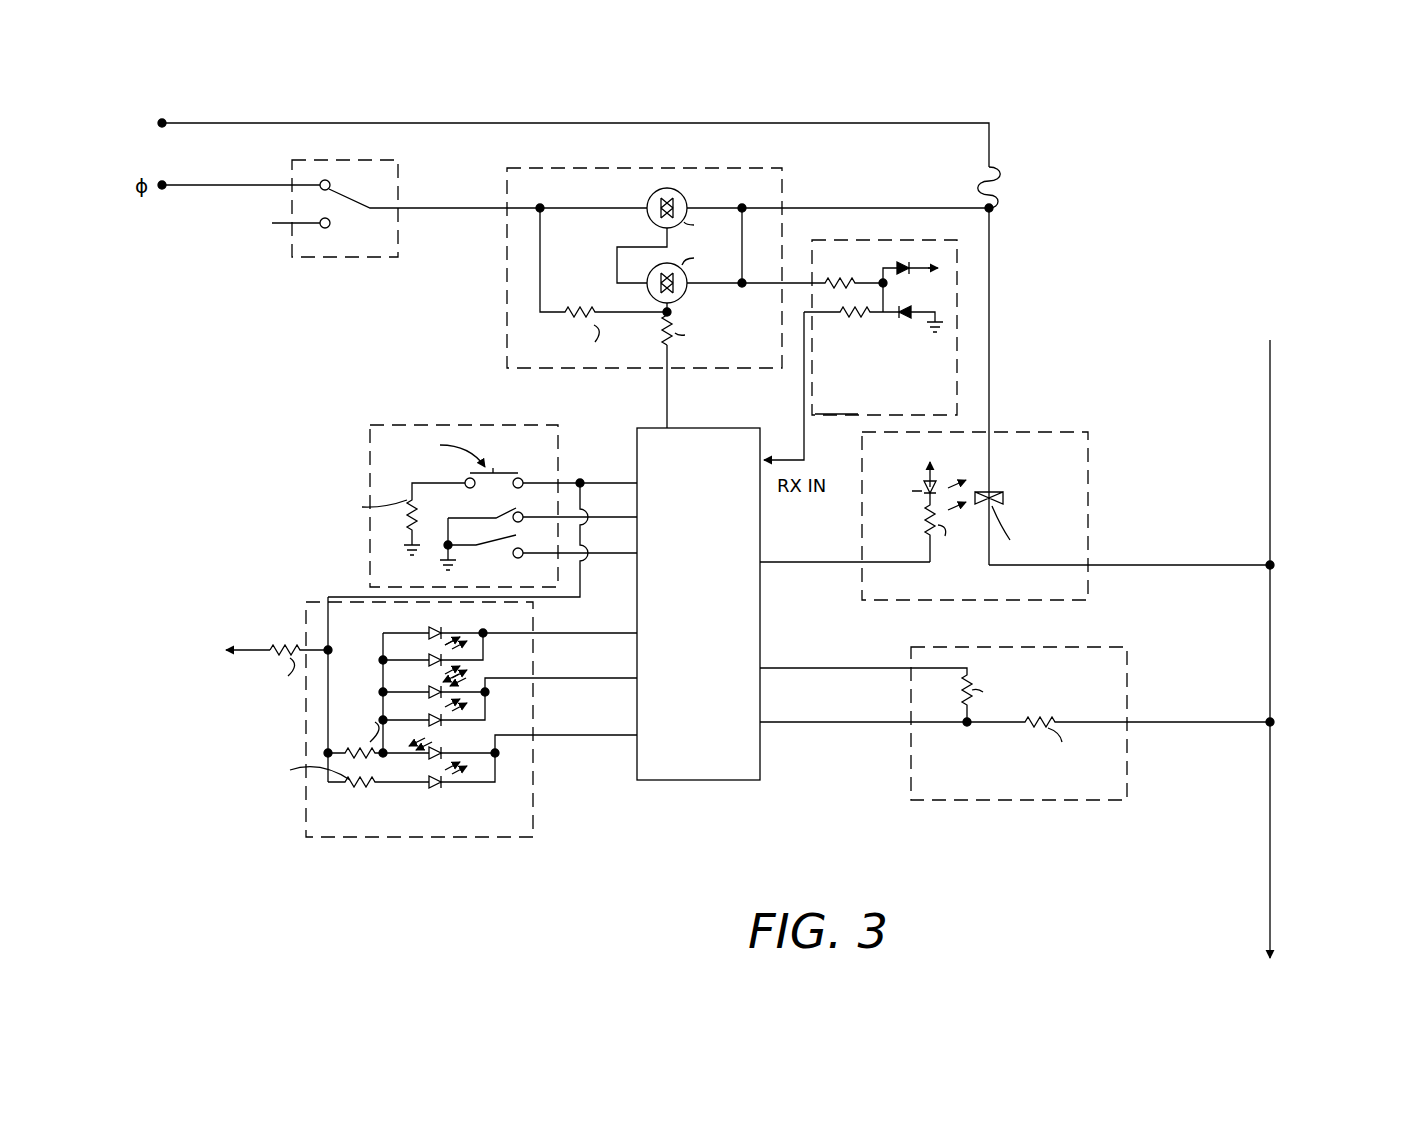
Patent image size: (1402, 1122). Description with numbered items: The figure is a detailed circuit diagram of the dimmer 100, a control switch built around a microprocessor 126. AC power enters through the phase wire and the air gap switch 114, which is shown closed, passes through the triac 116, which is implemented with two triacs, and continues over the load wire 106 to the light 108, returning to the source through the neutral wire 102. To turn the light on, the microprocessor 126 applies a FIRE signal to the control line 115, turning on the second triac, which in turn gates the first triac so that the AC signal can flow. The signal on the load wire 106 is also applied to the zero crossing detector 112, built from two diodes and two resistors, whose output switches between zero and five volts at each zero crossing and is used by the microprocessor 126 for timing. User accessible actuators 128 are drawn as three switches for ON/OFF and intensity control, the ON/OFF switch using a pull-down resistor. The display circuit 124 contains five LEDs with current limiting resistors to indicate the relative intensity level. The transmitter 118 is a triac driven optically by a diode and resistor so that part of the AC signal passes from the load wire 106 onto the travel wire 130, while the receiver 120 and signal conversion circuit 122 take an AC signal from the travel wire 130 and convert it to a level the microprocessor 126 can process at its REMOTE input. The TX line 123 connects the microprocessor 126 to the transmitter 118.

The dimmer 100 is at (286, 378).
The neutral wire 102 is at (770, 128).
The load wire 106 is at (1024, 338).
The light 108 is at (1000, 182).
The zero crossing detector 112 is at (872, 246).
The air gap switch 114 is at (398, 182).
The control line 115 is at (667, 393).
The triac 116 is at (507, 276).
The transmitter 118 is at (1040, 432).
The receiver 120 is at (1015, 743).
The signal conversion circuit 122 is at (1065, 800).
The TX line 123 is at (795, 565).
The display circuit 124 is at (533, 812).
The microprocessor 126 is at (652, 428).
The user accessible actuators 128 is at (410, 425).
The travel wire 130 is at (1270, 440).